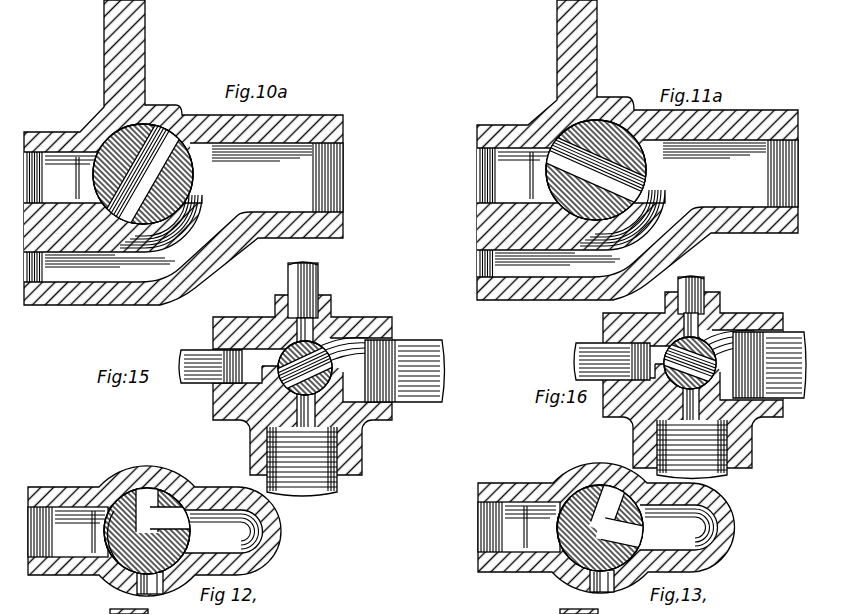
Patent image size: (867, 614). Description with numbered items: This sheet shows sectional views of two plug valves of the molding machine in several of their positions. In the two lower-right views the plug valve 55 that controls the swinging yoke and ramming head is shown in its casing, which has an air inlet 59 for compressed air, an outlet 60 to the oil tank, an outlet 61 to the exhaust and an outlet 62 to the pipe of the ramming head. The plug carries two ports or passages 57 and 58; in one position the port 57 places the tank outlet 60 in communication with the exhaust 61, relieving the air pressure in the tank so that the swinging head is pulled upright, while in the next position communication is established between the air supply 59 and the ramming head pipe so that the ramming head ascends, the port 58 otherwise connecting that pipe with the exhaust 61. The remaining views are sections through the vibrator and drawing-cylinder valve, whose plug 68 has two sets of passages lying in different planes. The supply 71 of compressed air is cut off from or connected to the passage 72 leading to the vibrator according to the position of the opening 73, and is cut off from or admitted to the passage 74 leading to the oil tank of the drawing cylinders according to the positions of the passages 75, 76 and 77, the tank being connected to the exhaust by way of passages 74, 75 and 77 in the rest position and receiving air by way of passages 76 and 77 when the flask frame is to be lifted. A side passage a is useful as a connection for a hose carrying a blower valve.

In FIG. 15, the plug valve 55 is at (388, 318).
In FIG. 16, the plug valve 55 is at (728, 313).
In FIG. 15, the port or passage 57 is at (311, 343).
In FIG. 16, the port or passage 57 is at (668, 347).
In FIG. 15, the port or passage 58 is at (318, 383).
In FIG. 16, the port or passage 58 is at (702, 385).
In FIG. 15, the air inlet 59 is at (430, 368).
In FIG. 16, the air inlet 59 is at (793, 330).
In FIG. 15, the outlet to the oil tank 60 is at (318, 272).
In FIG. 16, the outlet to the oil tank 60 is at (700, 280).
In FIG. 15, the outlet to the exhaust 61 is at (196, 352).
In FIG. 16, the outlet to the exhaust 61 is at (574, 362).
In FIG. 15, the outlet to the ramming head pipe 62 is at (338, 490).
In FIG. 16, the outlet to the ramming head pipe 62 is at (730, 476).
In FIG. 10a, the plug 68 is at (148, 128).
In FIG. 13, the plug 68 is at (560, 574).
In FIG. 10a, the supply of compressed air 71 is at (303, 184).
In FIG. 11a, the supply of compressed air 71 is at (637, 208).
In FIG. 12, the supply of compressed air 71 is at (224, 531).
In FIG. 13, the supply of compressed air 71 is at (679, 527).
In FIG. 10a, the passage to the vibrator 72 is at (54, 160).
In FIG. 11a, the passage to the vibrator 72 is at (487, 178).
In FIG. 10a, the opening 73 is at (143, 174).
In FIG. 11a, the opening 73 is at (595, 170).
In FIG. 12, the passage to the tank 74 is at (60, 507).
In FIG. 13, the passage to the tank 74 is at (486, 526).
In FIG. 12, the passage 75 is at (141, 509).
In FIG. 13, the passage 75 is at (608, 506).
In FIG. 12, the passage 76 is at (170, 518).
In FIG. 13, the passage 76 is at (622, 535).
In FIG. 12, the passage 77 is at (118, 536).
In FIG. 13, the passage 77 is at (568, 519).
In FIG. 10a, the side passage a is at (114, 268).
In FIG. 11a, the side passage a is at (558, 265).